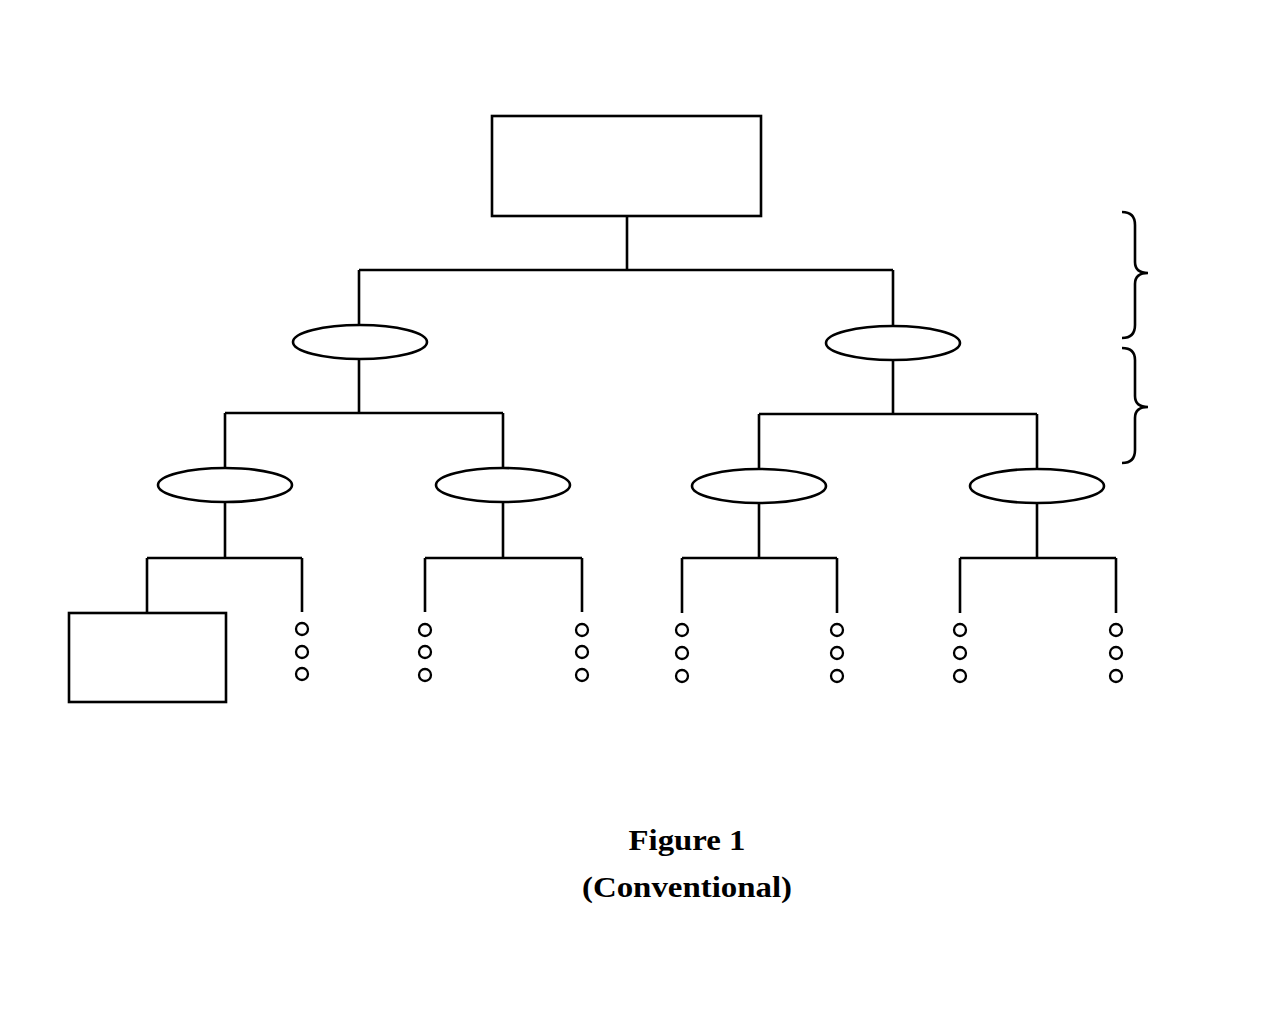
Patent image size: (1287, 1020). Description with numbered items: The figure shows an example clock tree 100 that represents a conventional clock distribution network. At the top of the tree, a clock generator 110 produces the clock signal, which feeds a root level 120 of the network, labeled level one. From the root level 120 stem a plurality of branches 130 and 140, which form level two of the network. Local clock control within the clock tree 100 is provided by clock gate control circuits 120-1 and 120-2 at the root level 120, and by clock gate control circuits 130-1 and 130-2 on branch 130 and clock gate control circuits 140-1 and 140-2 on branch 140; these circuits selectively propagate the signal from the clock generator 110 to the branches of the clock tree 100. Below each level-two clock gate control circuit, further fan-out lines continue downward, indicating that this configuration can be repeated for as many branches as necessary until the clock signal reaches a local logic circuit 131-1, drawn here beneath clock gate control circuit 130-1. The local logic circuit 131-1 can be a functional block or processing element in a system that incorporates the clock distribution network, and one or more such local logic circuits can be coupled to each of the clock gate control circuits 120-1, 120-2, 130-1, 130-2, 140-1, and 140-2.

The clock tree 100 is at (1073, 86).
The clock generator 110 is at (515, 114).
The root level 120 is at (419, 268).
The clock gate control circuit 120-1 is at (318, 327).
The clock gate control circuit 120-2 is at (840, 330).
The branch 130 is at (255, 412).
The clock gate control circuit 130-1 is at (183, 468).
The clock gate control circuit 130-2 is at (450, 470).
The branch 140 is at (782, 412).
The clock gate control circuit 140-1 is at (715, 472).
The clock gate control circuit 140-2 is at (992, 472).
The local logic circuit 131-1 is at (108, 612).